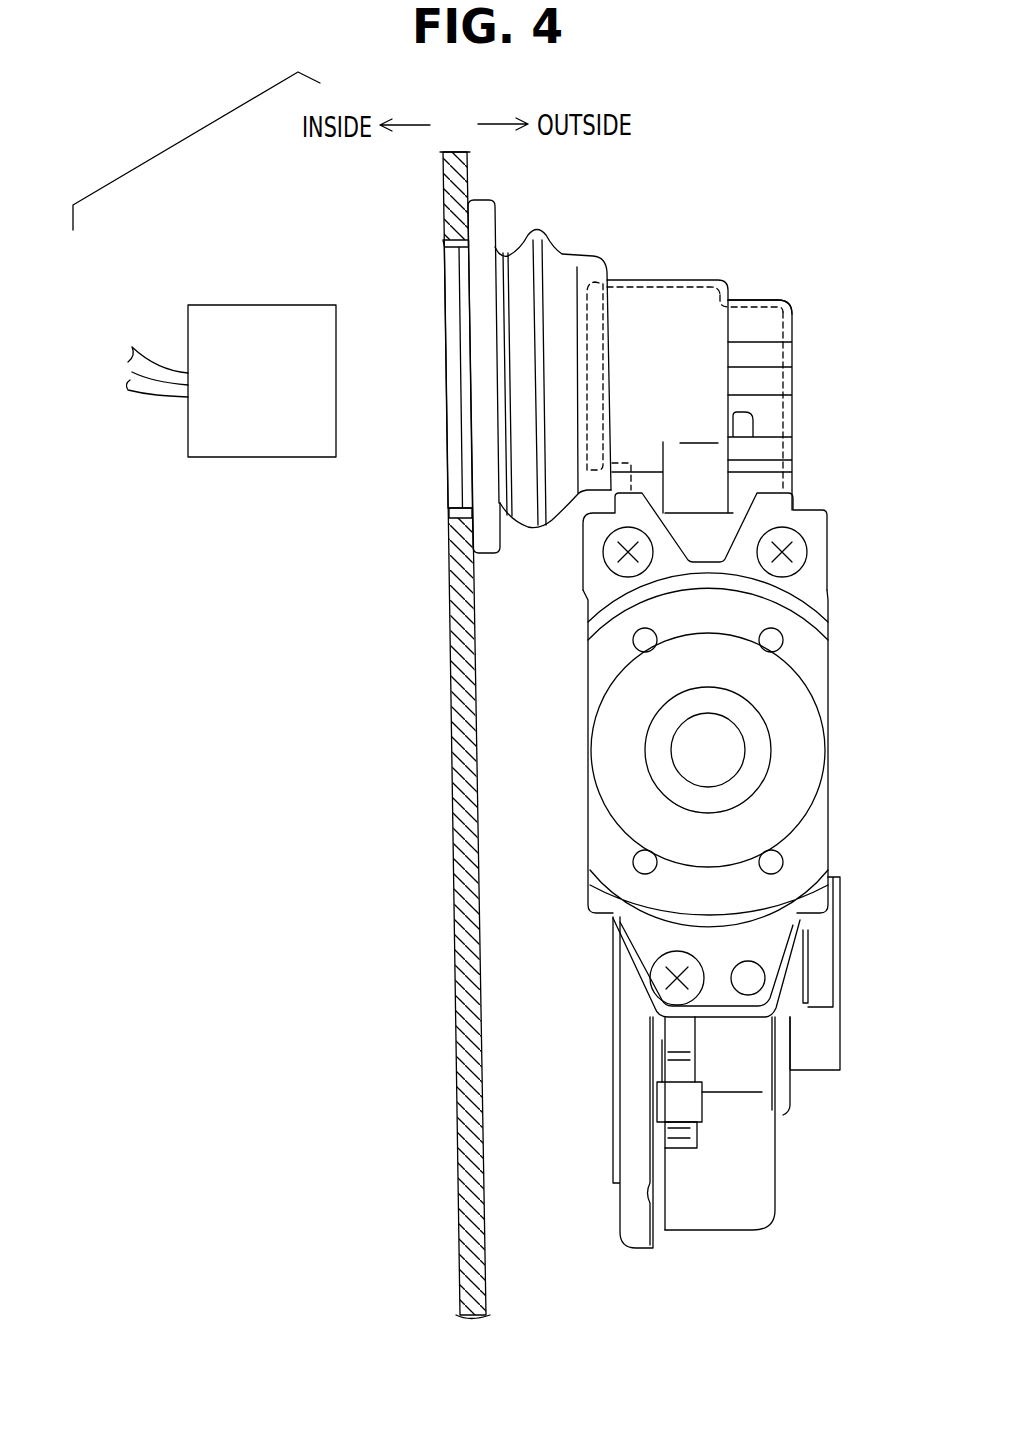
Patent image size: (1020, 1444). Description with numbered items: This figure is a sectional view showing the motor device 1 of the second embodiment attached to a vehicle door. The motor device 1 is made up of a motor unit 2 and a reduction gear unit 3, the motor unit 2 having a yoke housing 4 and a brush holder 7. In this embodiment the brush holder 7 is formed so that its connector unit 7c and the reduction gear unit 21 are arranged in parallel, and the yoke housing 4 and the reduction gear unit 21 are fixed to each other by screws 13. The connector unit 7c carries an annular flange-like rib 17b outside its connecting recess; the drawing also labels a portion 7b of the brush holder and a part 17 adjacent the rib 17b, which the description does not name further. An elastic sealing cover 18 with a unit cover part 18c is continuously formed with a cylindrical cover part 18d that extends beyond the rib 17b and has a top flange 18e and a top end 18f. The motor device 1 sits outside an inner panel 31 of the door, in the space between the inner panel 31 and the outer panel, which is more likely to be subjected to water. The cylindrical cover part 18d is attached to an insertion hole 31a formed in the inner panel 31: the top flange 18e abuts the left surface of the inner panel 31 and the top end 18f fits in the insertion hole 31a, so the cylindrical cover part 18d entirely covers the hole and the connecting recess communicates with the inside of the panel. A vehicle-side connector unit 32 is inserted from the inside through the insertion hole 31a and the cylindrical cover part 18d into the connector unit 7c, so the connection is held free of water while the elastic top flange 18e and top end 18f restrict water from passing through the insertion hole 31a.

The electric motor device 1 is at (851, 193).
The motor unit 2 is at (822, 750).
The reduction gear unit 3 is at (762, 1165).
The yoke housing 4 is at (822, 665).
The brush holder 7 is at (794, 392).
The guide rail rib 7b is at (777, 420).
The connector unit 7c is at (637, 283).
The screws 13 is at (603, 560).
The slider 17 is at (711, 283).
The rib 17b is at (596, 283).
The sealing cover 18 is at (681, 290).
The unit cover part 18c is at (753, 317).
The cylindrical cover part 18d is at (583, 232).
The top flange 18e is at (487, 548).
The top end 18f is at (453, 508).
The reduction gear unit 21 is at (621, 1062).
The inner panel 31 is at (457, 776).
The insertion hole 31a is at (452, 300).
The vehicle-side connector unit 32 is at (253, 448).